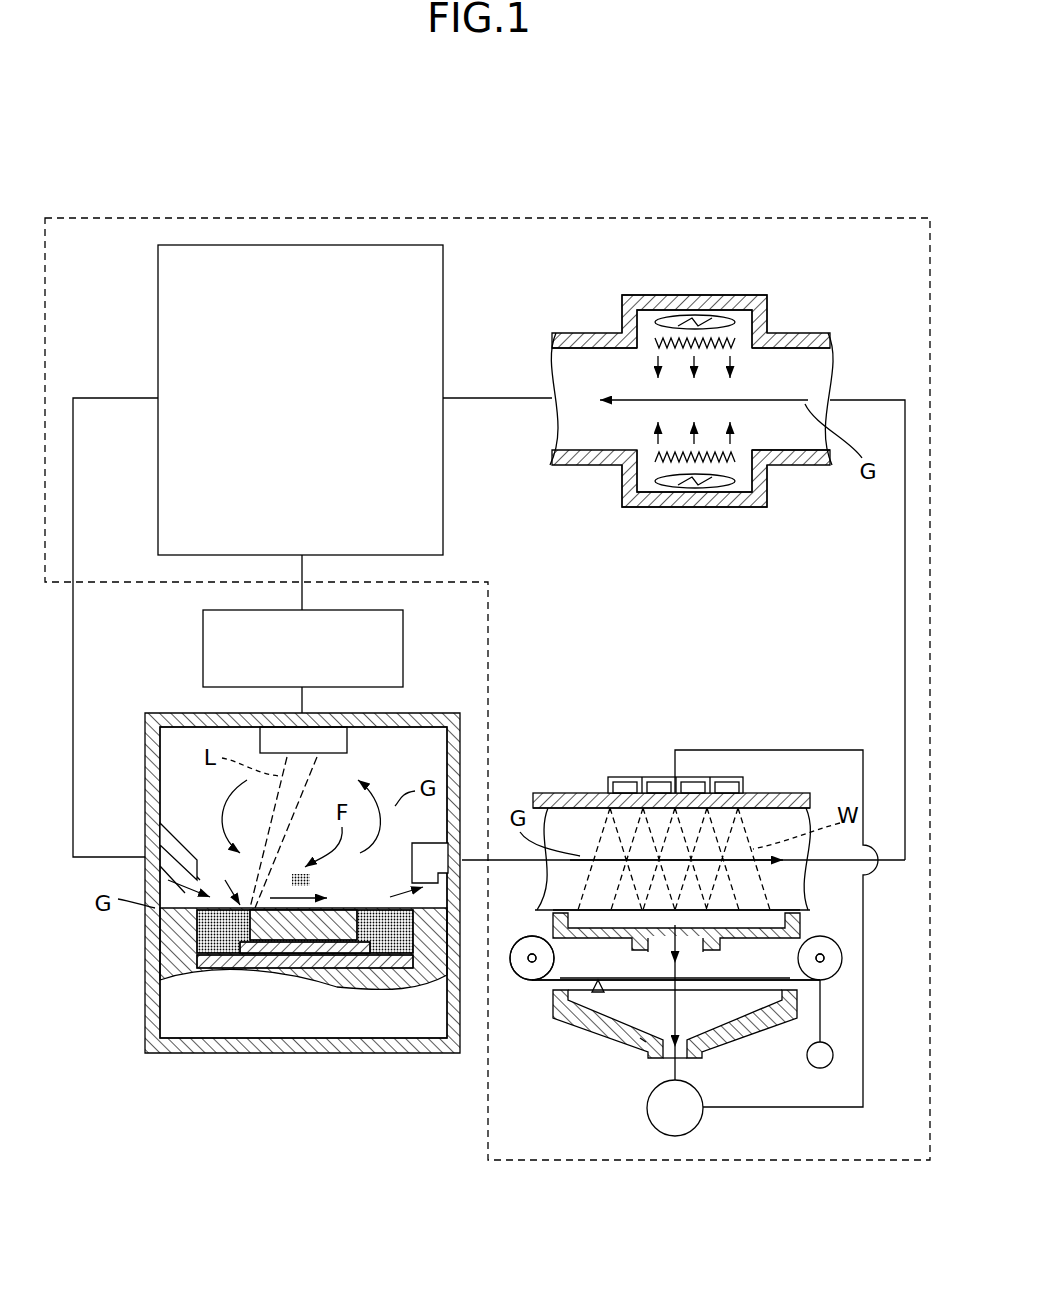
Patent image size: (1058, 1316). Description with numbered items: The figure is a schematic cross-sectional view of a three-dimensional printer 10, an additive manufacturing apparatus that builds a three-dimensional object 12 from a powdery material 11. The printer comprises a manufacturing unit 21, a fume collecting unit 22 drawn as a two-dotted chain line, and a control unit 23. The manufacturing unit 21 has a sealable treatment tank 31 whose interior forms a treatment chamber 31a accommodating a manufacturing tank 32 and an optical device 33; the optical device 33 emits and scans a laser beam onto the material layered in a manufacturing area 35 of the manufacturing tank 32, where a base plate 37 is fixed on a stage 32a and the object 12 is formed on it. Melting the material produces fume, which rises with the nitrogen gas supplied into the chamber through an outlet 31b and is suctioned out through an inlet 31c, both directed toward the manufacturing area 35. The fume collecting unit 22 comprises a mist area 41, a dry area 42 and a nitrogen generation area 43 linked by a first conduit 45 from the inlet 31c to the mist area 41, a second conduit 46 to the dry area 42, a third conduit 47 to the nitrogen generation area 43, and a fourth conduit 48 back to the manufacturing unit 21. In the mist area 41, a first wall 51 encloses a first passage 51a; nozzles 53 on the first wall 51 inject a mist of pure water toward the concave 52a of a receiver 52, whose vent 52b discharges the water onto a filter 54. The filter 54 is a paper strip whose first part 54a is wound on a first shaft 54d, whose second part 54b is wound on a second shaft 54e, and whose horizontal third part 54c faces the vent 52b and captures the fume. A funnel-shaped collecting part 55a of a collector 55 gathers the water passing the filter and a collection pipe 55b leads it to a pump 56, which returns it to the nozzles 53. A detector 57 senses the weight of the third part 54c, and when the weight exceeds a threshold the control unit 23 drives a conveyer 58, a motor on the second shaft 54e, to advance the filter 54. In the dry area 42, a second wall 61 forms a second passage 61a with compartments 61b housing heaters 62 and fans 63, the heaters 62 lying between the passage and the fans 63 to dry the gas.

The three-dimensional printer 10 is at (117, 100).
The material 11 is at (375, 940).
The object 12 is at (322, 949).
The manufacturing unit 21 is at (145, 1046).
The fume collecting unit 22 is at (757, 214).
The control unit 23 is at (203, 646).
The treatment tank 31 is at (148, 713).
The treatment chamber 31a is at (187, 732).
The outlet 31b is at (160, 844).
The inlet 31c is at (435, 853).
The manufacturing tank 32 is at (165, 947).
The stage 32a is at (215, 970).
The optical device 33 is at (342, 737).
The manufacturing area 35 is at (172, 870).
The base plate 37 is at (268, 955).
The mist area 41 is at (560, 793).
The dry area 42 is at (818, 336).
The nitrogen generation area 43 is at (422, 245).
The first conduit 45 is at (510, 862).
The second conduit 46 is at (905, 629).
The third conduit 47 is at (490, 398).
The fourth conduit 48 is at (73, 633).
The first wall 51 is at (578, 795).
The first passage 51a is at (787, 805).
The receiver 52 is at (815, 926).
The concave 52a is at (768, 910).
The vent 52b is at (598, 992).
The nozzles 53 is at (633, 790).
The filter 54 is at (850, 962).
The first part 54a is at (522, 975).
The second part 54b is at (838, 976).
The third part 54c is at (767, 981).
The first shaft 54d is at (532, 977).
The second shaft 54e is at (838, 980).
The collector 55 is at (652, 1055).
The collecting part 55a is at (738, 1034).
The collection pipe 55b is at (656, 1057).
The pump 56 is at (680, 1137).
The detector 57 is at (635, 1044).
The conveyer 58 is at (833, 1064).
The second wall 61 is at (596, 338).
The second passage 61a is at (578, 362).
The compartments 61b is at (742, 312).
The heaters 62 is at (658, 340).
The fans 63 is at (690, 320).